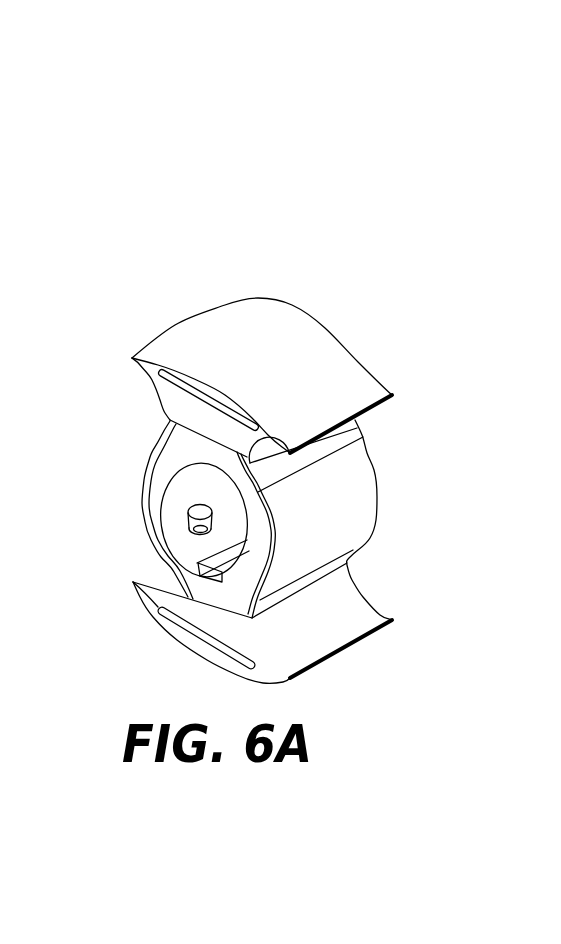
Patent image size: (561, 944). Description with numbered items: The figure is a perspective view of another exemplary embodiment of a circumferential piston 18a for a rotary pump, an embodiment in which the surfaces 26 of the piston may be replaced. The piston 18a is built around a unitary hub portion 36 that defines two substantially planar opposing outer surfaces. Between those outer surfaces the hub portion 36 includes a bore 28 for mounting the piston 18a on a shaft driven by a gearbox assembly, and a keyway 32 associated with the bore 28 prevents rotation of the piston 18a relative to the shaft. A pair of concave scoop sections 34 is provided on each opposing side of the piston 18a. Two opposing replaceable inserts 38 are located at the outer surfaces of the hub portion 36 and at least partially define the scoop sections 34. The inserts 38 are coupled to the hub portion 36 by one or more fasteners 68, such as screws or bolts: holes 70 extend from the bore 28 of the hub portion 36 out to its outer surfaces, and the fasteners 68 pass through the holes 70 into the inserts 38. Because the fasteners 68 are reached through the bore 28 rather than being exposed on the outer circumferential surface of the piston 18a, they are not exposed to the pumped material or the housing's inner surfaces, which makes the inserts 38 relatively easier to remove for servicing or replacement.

The piston 18a is at (286, 160).
The surfaces 26 is at (268, 497).
The bore 28 is at (184, 488).
The keyway 32 is at (197, 563).
The concave scoop sections 34 is at (160, 390).
The hub portion 36 is at (353, 484).
The replaceable inserts 38 is at (278, 298).
The fasteners 68 is at (199, 532).
The holes 70 is at (187, 516).